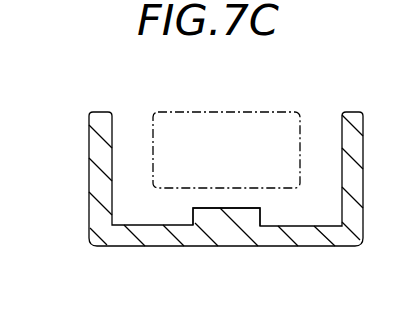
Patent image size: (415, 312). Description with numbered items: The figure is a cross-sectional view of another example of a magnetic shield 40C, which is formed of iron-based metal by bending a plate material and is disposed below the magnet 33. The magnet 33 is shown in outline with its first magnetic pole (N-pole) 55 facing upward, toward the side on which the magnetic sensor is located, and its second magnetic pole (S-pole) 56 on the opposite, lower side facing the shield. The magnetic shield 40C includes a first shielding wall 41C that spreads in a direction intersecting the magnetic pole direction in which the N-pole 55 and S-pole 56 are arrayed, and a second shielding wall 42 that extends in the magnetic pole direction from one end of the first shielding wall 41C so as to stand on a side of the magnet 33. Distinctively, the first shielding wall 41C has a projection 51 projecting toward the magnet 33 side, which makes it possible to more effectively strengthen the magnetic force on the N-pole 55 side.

The magnet 33 is at (279, 112).
The magnetic shield 40C is at (108, 251).
The first shielding wall 41C is at (283, 240).
The second shielding wall 42 is at (99, 168).
The projection 51 is at (192, 215).
The first magnetic pole (N-pole) 55 is at (234, 127).
The second magnetic pole (S-pole) 56 is at (232, 172).